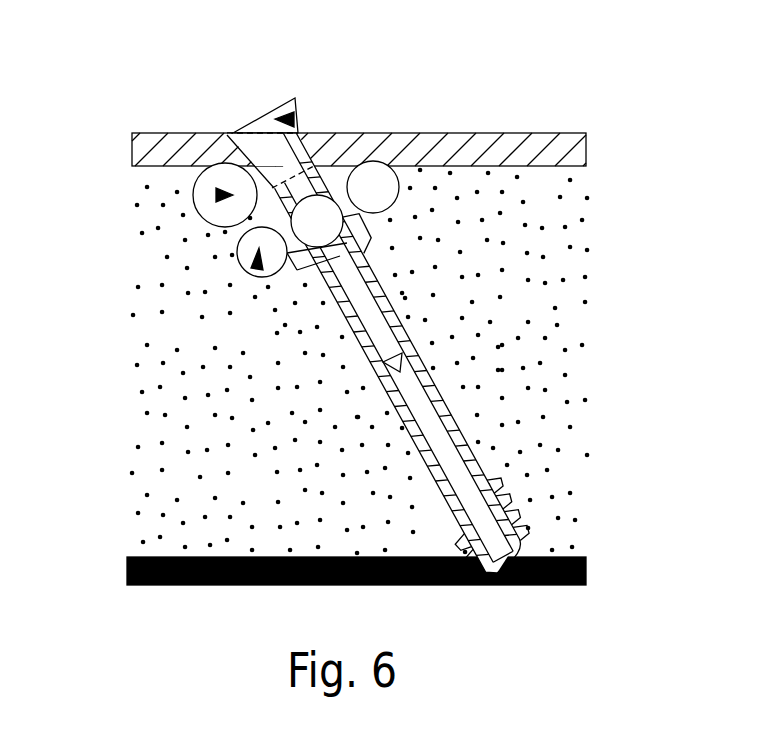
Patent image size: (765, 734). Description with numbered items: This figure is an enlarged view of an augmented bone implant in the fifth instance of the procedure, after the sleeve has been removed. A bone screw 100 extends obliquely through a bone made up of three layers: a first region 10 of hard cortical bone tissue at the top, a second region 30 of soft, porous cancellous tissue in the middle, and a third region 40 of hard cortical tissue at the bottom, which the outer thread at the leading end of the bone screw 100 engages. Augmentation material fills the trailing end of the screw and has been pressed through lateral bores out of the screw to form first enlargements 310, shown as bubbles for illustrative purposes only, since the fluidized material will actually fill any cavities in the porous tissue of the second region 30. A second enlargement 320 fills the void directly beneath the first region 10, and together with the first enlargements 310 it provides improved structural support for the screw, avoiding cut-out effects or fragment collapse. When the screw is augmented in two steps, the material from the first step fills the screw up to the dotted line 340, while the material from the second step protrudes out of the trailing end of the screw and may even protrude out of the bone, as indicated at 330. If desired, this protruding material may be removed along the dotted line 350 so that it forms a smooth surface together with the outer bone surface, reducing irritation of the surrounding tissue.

The first region 10 is at (497, 140).
The second region 30 is at (528, 355).
The third region 40 is at (183, 586).
The bone screw 100 is at (503, 447).
The first enlargements 310 is at (257, 270).
The second enlargement 320 is at (218, 195).
The augmentation material protruding out of the bone 330 is at (294, 120).
The dotted line 340 is at (293, 170).
The dotted line 350 is at (268, 133).